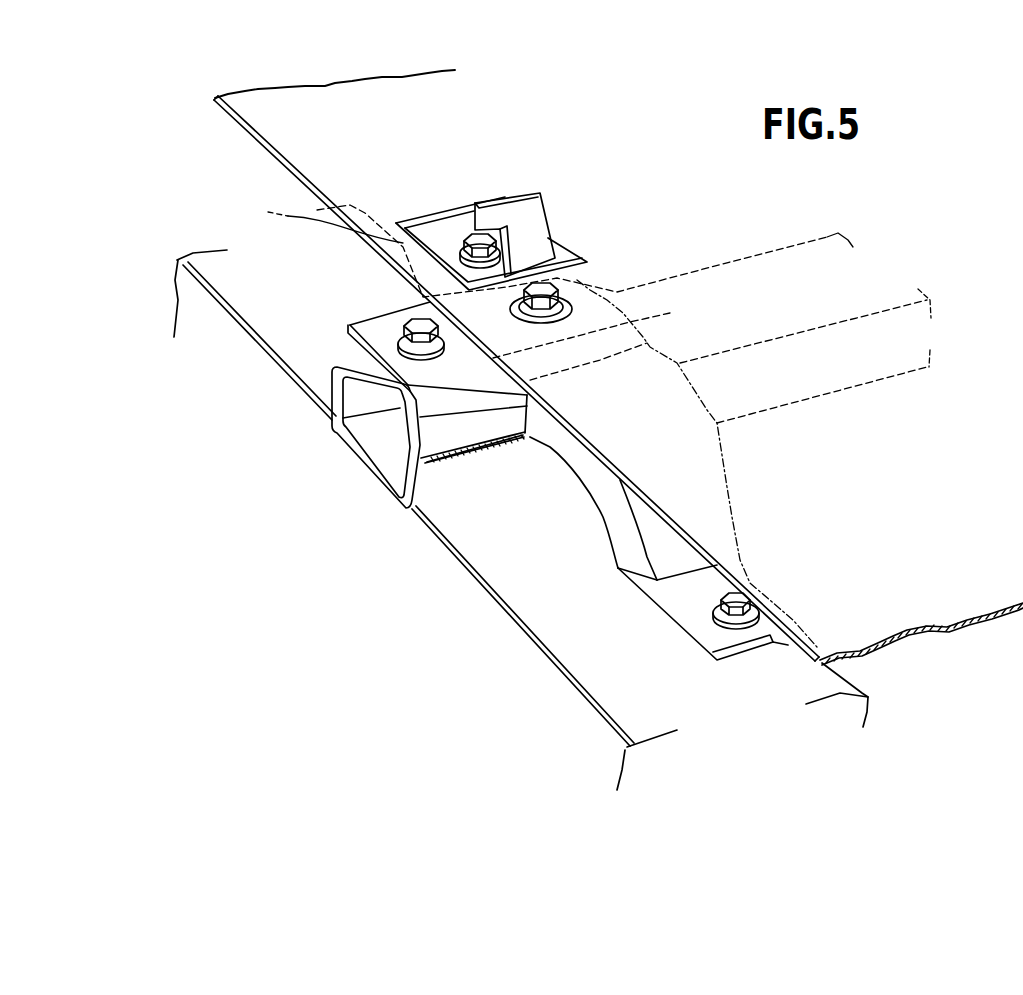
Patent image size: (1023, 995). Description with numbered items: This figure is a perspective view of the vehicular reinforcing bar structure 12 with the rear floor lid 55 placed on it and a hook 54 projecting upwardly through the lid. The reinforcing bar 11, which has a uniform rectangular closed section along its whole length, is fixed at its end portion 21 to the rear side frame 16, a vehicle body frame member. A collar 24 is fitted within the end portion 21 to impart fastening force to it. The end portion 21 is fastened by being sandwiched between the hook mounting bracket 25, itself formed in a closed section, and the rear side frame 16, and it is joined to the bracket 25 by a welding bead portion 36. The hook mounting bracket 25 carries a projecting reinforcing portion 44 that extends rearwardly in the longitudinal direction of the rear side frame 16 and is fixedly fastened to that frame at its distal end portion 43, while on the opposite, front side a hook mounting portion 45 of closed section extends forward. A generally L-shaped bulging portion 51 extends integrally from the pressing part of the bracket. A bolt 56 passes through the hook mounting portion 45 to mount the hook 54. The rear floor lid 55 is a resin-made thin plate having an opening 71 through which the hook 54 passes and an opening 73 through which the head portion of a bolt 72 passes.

The reinforcing bar 11 is at (322, 435).
The vehicular reinforcing bar structure 12 is at (586, 188).
The rear side frame 16 is at (202, 227).
The one end portion 21 is at (452, 446).
The collar 24 is at (398, 440).
The hook mounting bracket 25 is at (334, 319).
The welding bead portion 36 is at (482, 446).
The distal end portion 43 is at (683, 623).
The projecting reinforcing portion 44 is at (583, 490).
The hook mounting portion 45 is at (318, 218).
The bulging portion 51 is at (413, 507).
The hook 54 is at (520, 195).
The rear floor lid 55 is at (253, 104).
The bolt 56 is at (465, 229).
The opening 71 is at (577, 257).
The bolt 72 is at (412, 318).
The opening 73 is at (582, 318).